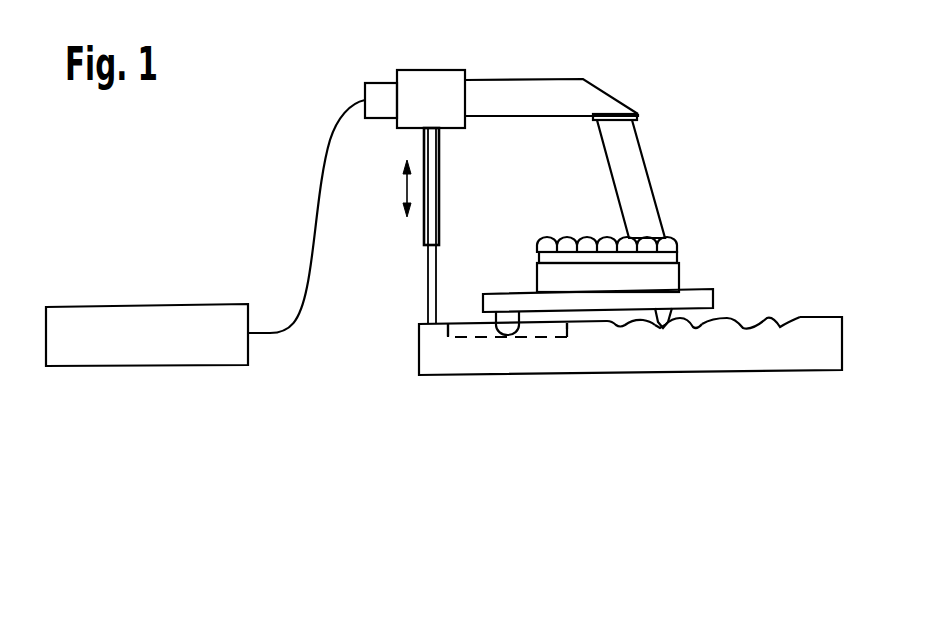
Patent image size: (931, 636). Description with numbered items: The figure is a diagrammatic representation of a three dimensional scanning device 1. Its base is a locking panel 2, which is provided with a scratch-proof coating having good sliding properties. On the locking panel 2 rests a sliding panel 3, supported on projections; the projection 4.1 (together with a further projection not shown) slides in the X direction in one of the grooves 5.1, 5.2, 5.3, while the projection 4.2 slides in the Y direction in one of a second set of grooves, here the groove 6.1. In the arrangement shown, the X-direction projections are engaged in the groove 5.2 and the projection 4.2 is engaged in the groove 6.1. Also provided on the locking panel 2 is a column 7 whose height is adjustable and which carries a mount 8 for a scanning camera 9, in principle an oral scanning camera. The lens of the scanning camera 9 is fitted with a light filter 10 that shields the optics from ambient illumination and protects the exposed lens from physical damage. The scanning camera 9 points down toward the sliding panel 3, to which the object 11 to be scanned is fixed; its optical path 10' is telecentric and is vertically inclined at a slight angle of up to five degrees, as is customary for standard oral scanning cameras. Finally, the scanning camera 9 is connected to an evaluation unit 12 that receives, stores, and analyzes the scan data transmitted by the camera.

The scanning device 1 is at (357, 64).
The locking panel 2 is at (443, 364).
The sliding panel 3 is at (697, 294).
The projection 4.1 is at (677, 318).
The projection 4.2 is at (505, 318).
The groove 5.1 is at (621, 328).
The groove 5.2 is at (664, 330).
The groove 5.3 is at (707, 319).
The groove 6.1 is at (516, 338).
The column 7 is at (428, 277).
The mount 8 is at (440, 80).
The scanning camera 9 is at (612, 96).
The light filter 10 is at (654, 96).
The optical path 10' is at (659, 178).
The object 11 is at (683, 243).
The evaluation unit 12 is at (133, 365).